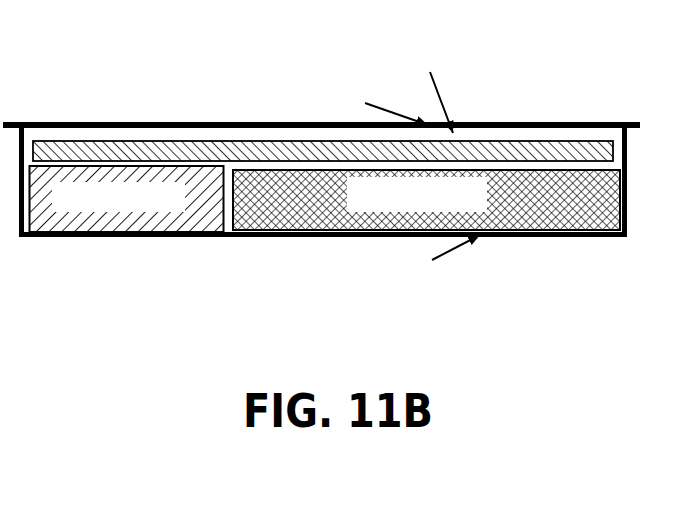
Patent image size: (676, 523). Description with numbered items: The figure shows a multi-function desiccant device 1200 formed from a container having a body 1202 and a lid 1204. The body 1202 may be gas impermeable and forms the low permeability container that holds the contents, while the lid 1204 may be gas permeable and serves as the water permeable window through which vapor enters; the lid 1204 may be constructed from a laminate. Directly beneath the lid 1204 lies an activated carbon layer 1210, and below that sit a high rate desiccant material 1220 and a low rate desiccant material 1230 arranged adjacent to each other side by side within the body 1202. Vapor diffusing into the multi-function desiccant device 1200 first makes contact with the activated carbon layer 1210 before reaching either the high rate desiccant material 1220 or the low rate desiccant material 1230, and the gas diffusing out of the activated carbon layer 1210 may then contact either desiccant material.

The multi-function desiccant device 1200 is at (327, 197).
The body 1202 is at (618, 237).
The lid 1204 is at (614, 122).
The activated carbon layer 1210 is at (535, 141).
The high rate desiccant material 1220 is at (38, 236).
The low rate desiccant material 1230 is at (505, 236).